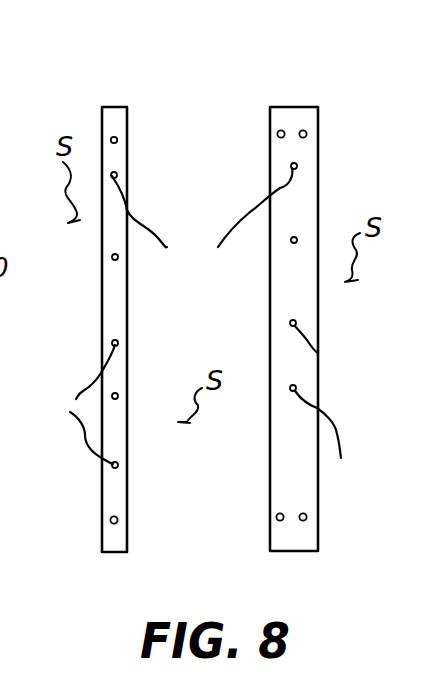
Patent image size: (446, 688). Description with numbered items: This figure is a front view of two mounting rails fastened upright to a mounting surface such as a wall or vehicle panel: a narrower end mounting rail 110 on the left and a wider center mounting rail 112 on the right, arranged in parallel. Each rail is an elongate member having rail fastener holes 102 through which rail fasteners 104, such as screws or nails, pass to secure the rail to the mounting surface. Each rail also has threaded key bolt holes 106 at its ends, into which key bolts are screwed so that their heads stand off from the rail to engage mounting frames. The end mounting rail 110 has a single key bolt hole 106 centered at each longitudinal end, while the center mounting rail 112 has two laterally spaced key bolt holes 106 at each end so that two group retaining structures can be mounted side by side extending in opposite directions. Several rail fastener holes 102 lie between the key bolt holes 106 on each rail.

The end mounting rail 110 is at (160, 68).
The center mounting rail 112 is at (333, 60).
The key bolt hole 106 is at (118, 137).
The rail fastener 104 is at (291, 166).
The rail fastener hole 102 is at (291, 241).